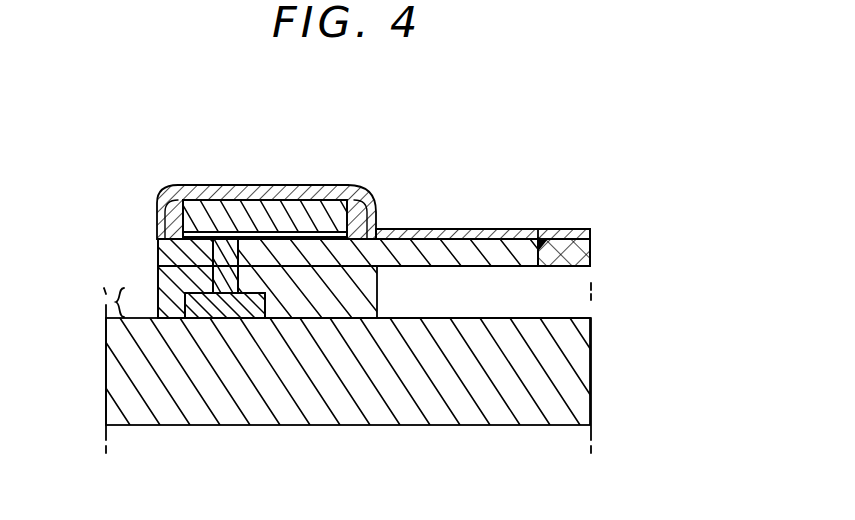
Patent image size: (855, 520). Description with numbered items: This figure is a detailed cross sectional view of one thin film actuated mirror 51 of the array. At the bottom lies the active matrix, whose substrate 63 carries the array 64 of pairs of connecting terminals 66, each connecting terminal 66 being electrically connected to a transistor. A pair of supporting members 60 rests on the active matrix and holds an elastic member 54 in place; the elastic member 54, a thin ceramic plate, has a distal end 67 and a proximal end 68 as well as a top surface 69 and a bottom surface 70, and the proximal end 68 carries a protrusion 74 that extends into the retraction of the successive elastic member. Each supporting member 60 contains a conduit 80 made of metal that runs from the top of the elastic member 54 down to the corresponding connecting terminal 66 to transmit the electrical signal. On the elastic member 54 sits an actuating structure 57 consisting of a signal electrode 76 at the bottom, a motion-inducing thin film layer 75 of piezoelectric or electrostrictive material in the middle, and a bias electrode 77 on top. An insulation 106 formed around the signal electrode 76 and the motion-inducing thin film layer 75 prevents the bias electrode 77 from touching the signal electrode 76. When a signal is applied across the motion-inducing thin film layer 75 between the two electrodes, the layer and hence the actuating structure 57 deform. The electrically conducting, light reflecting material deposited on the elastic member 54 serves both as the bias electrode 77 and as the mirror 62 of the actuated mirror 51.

The thin film actuated mirror 51 is at (527, 113).
The elastic member 54 is at (458, 252).
The actuating structure 57 is at (250, 205).
The supporting member 60 is at (182, 291).
The mirror 62 is at (518, 229).
The substrate 63 is at (297, 405).
The array of pairs of connecting terminals 64 is at (106, 305).
The connecting terminal 66 is at (226, 306).
The distal end 67 is at (183, 250).
The proximal end 68 is at (552, 232).
The top surface 69 is at (452, 233).
The bottom surface 70 is at (527, 264).
The protrusion 74 is at (558, 252).
The motion-inducing thin film layer 75 is at (300, 208).
The signal electrode 76 is at (345, 272).
The bias electrode 77 is at (225, 192).
The conduit 80 is at (320, 333).
The insulation 106 is at (168, 198).